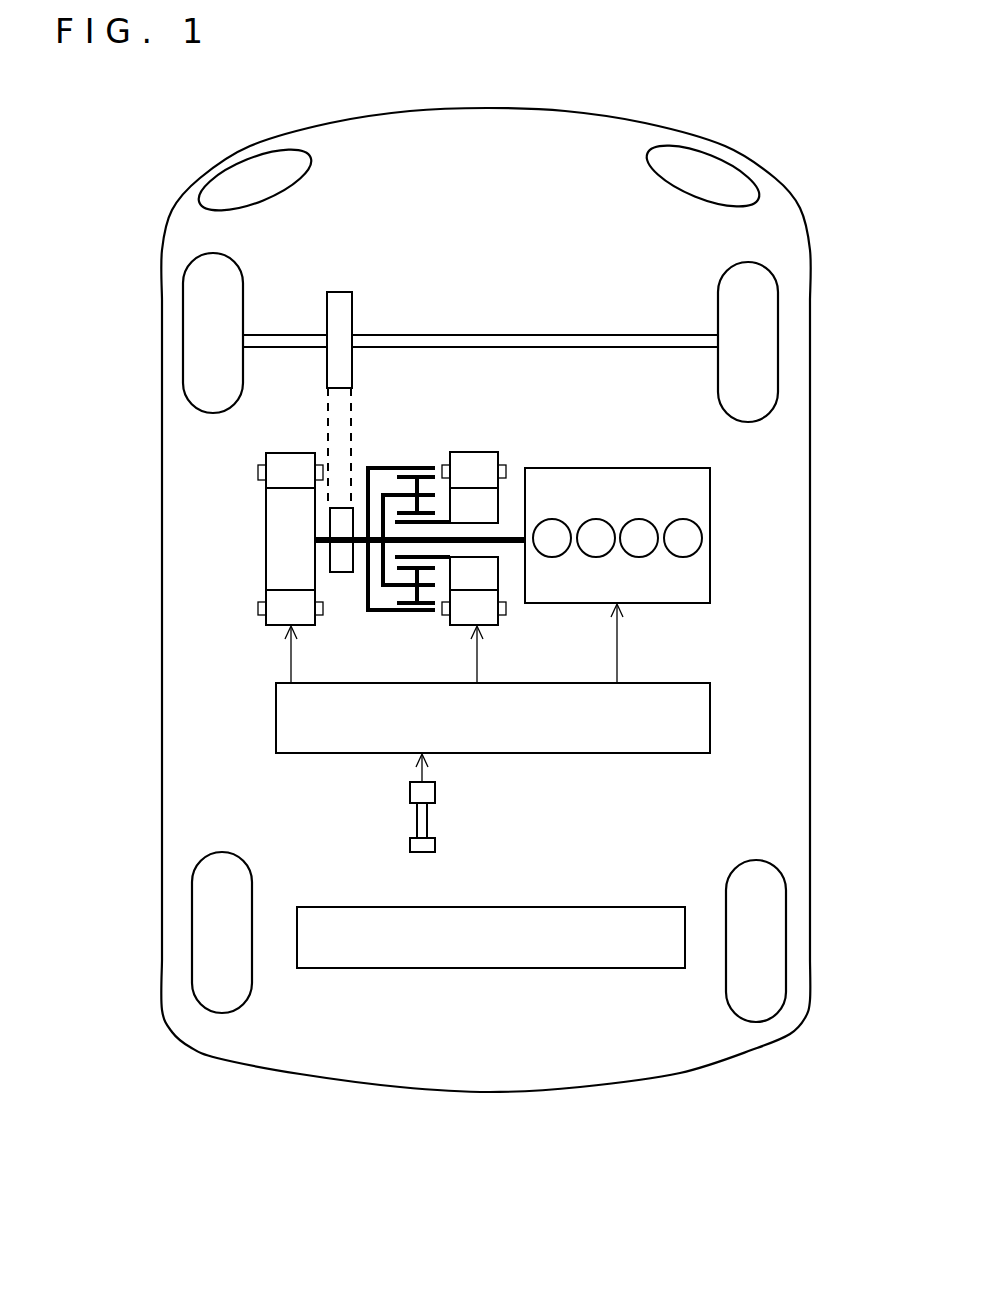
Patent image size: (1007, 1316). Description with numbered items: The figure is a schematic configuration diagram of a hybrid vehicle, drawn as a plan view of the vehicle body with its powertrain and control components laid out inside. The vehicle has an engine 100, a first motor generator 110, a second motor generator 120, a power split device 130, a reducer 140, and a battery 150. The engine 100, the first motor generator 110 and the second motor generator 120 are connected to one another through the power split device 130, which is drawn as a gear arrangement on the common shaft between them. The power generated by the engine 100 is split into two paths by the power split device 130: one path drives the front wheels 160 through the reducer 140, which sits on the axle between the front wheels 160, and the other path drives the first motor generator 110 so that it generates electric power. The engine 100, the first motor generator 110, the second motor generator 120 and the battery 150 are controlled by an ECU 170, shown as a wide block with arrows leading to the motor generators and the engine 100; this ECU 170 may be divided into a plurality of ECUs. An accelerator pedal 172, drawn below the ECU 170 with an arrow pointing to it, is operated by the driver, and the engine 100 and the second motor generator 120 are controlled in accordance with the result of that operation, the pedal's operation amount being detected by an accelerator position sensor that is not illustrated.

The engine 100 is at (565, 468).
The first motor generator 110 is at (478, 452).
The second motor generator 120 is at (266, 540).
The power split device 130 is at (403, 468).
The reducer 140 is at (339, 282).
The battery 150 is at (457, 968).
The front wheels 160 is at (183, 344).
The ECU 170 is at (276, 724).
The accelerator pedal 172 is at (410, 790).